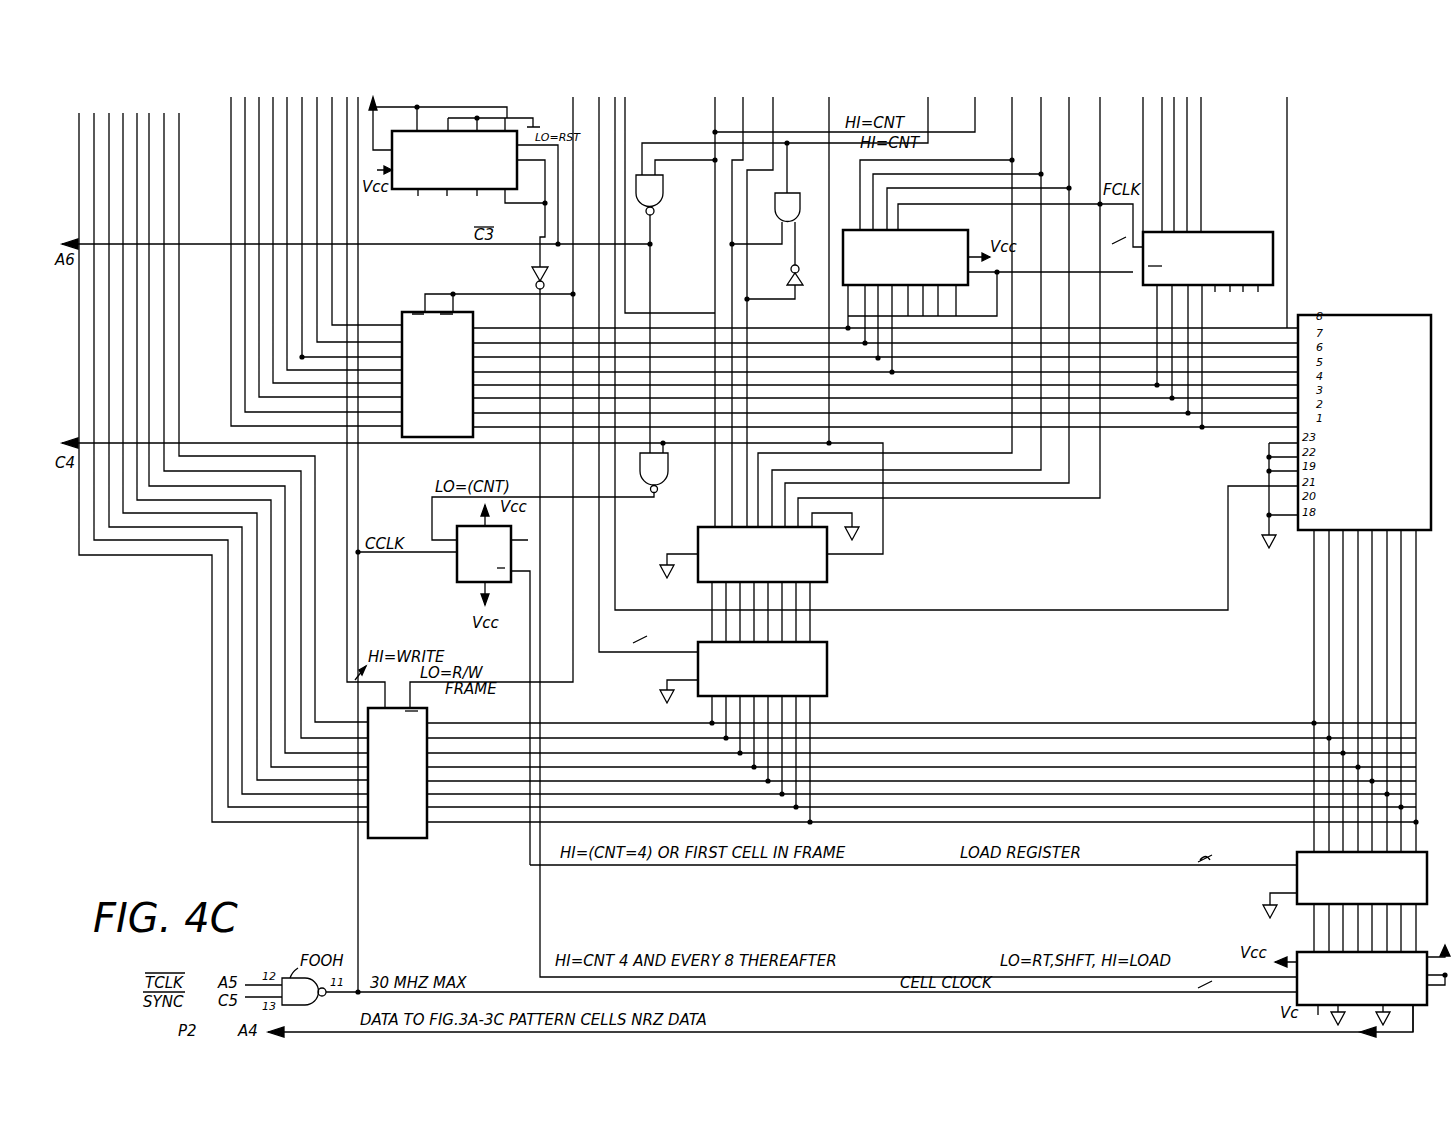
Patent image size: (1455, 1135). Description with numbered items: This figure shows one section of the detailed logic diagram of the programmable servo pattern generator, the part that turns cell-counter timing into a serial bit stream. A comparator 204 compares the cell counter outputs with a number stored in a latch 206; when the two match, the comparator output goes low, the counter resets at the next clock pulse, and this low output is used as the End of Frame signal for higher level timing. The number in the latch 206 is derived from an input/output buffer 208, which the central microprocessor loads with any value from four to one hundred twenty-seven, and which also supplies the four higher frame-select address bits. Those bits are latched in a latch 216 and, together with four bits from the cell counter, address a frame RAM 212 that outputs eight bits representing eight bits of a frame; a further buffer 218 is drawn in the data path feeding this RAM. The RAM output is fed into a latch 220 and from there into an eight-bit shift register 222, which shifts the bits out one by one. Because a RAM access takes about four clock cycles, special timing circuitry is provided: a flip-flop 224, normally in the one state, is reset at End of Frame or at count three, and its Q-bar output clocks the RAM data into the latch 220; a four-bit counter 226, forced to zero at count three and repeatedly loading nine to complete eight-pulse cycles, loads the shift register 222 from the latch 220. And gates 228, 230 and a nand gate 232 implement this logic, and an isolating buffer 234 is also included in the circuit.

The comparator 204 is at (827, 574).
The latch 206 is at (827, 648).
The input/output buffer 208 is at (404, 841).
The frame RAM 212 is at (1352, 297).
The latch 216 is at (1275, 266).
The buffer 218 is at (1003, 226).
The latch 220 is at (1297, 874).
The 8-bit shift register 222 is at (1297, 952).
The flip-flop 224 is at (456, 576).
The 4-bit counter 226 is at (396, 195).
The and gate 228 is at (812, 180).
The and gate 230 is at (665, 473).
The nand gate 232 is at (660, 188).
The isolating buffer 234 is at (438, 438).